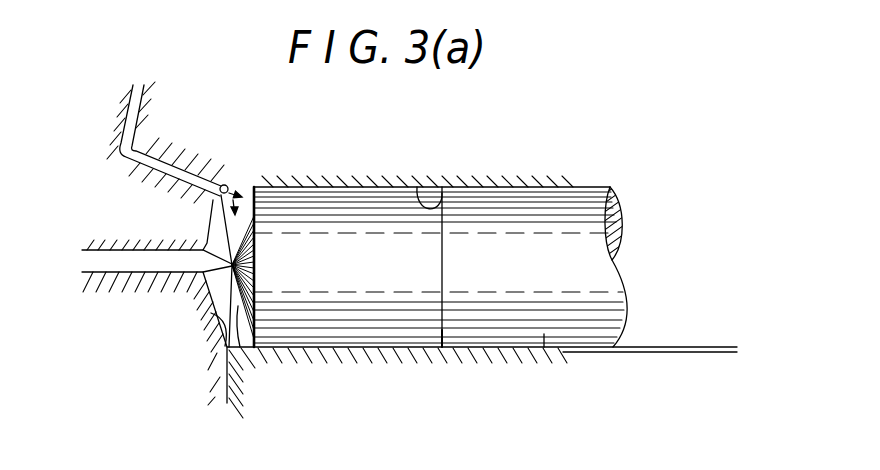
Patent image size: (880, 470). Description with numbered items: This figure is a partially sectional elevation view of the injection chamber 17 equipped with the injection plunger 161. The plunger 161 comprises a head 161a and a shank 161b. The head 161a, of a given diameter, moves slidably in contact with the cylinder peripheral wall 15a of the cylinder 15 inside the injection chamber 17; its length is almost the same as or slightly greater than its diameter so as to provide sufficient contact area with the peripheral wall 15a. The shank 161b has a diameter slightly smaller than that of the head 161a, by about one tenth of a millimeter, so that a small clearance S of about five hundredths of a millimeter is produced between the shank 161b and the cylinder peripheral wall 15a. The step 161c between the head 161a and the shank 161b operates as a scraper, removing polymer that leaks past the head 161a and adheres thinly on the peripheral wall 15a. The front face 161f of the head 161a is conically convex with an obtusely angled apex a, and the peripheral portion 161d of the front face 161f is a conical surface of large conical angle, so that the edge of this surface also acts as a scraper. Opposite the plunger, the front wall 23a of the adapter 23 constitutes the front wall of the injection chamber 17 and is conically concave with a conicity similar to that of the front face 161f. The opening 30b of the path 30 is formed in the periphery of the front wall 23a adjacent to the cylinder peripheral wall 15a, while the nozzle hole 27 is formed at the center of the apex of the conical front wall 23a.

The cylinder 15 is at (441, 168).
The cylinder peripheral wall 15a is at (447, 200).
The injection chamber 17 is at (220, 196).
The adapter 23 is at (172, 352).
The front wall of the adapter 23a is at (222, 338).
The nozzle hole 27 is at (122, 271).
The path 30 is at (140, 118).
The opening of the path 30b is at (228, 182).
The injection plunger 161 is at (602, 150).
The head 161a is at (378, 350).
The shank 161b is at (552, 350).
The step 161c is at (445, 348).
The peripheral portion of the head front face 161d is at (255, 186).
The front face of the head 161f is at (237, 350).
The apex a is at (210, 242).
The clearance S is at (669, 376).